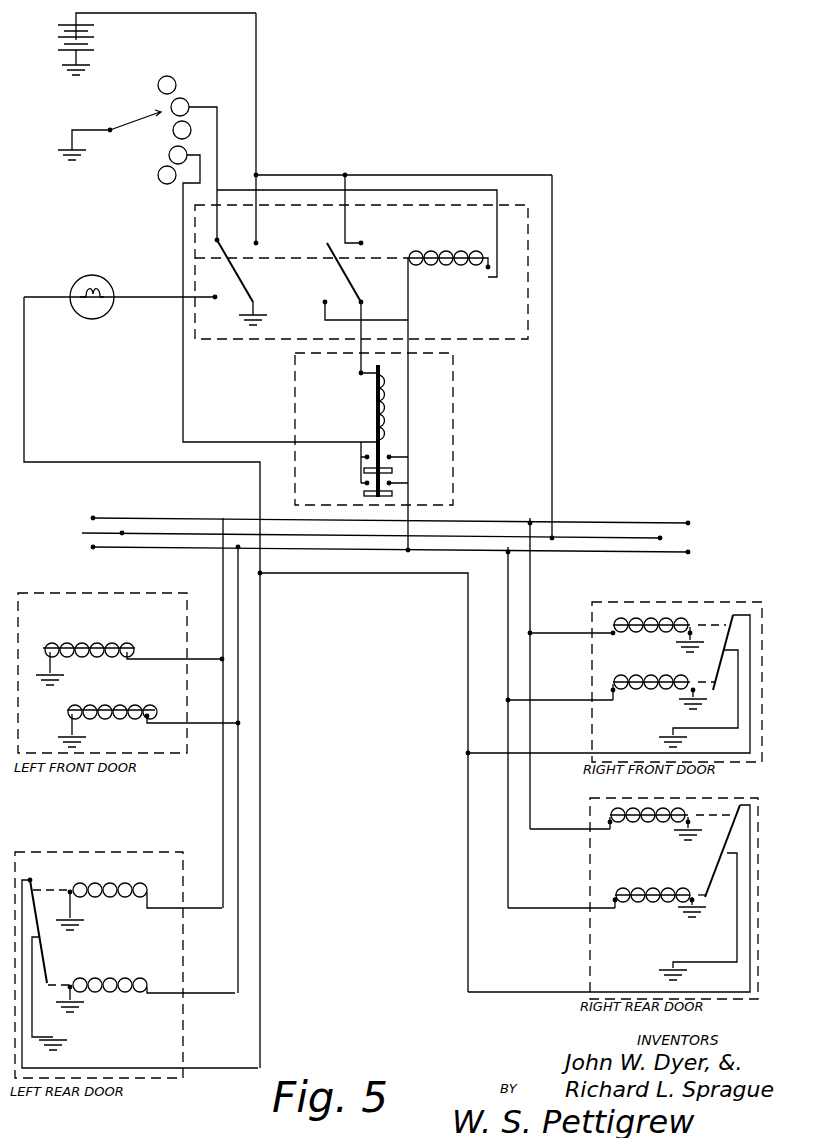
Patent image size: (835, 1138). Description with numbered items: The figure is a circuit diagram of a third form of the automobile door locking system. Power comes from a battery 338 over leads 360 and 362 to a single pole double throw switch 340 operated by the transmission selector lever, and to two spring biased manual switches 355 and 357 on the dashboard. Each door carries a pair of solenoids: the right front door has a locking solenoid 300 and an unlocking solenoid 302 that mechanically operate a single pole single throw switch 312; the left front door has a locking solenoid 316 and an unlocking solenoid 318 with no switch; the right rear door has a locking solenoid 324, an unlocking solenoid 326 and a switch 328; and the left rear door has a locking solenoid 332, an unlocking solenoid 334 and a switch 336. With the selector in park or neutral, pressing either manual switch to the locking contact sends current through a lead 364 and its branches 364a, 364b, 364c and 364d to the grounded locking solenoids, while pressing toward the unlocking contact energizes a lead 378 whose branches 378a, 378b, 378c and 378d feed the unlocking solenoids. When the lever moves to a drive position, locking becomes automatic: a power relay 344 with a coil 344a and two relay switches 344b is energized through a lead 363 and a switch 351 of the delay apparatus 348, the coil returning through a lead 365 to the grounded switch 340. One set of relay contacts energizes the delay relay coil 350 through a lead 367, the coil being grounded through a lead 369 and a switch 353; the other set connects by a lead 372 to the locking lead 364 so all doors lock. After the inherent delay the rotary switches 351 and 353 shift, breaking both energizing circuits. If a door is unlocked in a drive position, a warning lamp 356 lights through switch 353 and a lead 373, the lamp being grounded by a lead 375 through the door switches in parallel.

The battery 338 is at (95, 40).
The single pole double throw switch 340 is at (170, 133).
The lead 360 is at (256, 100).
The lead 369 is at (415, 175).
The delay apparatus 348 is at (534, 307).
The lead 363 is at (345, 213).
The delay relay coil 350 is at (478, 258).
The switch 353 is at (222, 258).
The switch 351 is at (349, 290).
The lead 367 is at (408, 320).
The warning lamp 356 is at (86, 276).
The lead 373 is at (165, 297).
The lead 365 is at (183, 365).
The lead 375 is at (24, 407).
The power relay 344 is at (287, 437).
The coil 344a is at (378, 410).
The relay switches 344b is at (392, 470).
The lead 372 is at (408, 515).
The lead 362 is at (552, 440).
The lead 378 is at (473, 522).
The single pole double throw switch 355 is at (86, 532).
The single pole double throw switch 357 is at (690, 538).
The lead 364 is at (302, 548).
The unlocking solenoid 318 is at (80, 645).
The branch lead 378b is at (205, 659).
The locking solenoid 316 is at (125, 708).
The branch lead 364b is at (208, 723).
The branch lead 378d is at (221, 845).
The unlocking solenoid 334 is at (110, 882).
The locking solenoid 332 is at (103, 978).
The branch lead 364d is at (187, 993).
The switch 336 is at (38, 925).
The unlocking solenoid 302 is at (640, 606).
The branch lead 378a is at (586, 613).
The locking solenoid 300 is at (680, 690).
The branch lead 364a is at (573, 700).
The single pole single throw switch 312 is at (717, 672).
The unlocking solenoid 326 is at (660, 825).
The branch lead 378c is at (531, 782).
The locking solenoid 324 is at (666, 872).
The branch lead 364c is at (508, 835).
The single pole single throw switch 328 is at (715, 880).